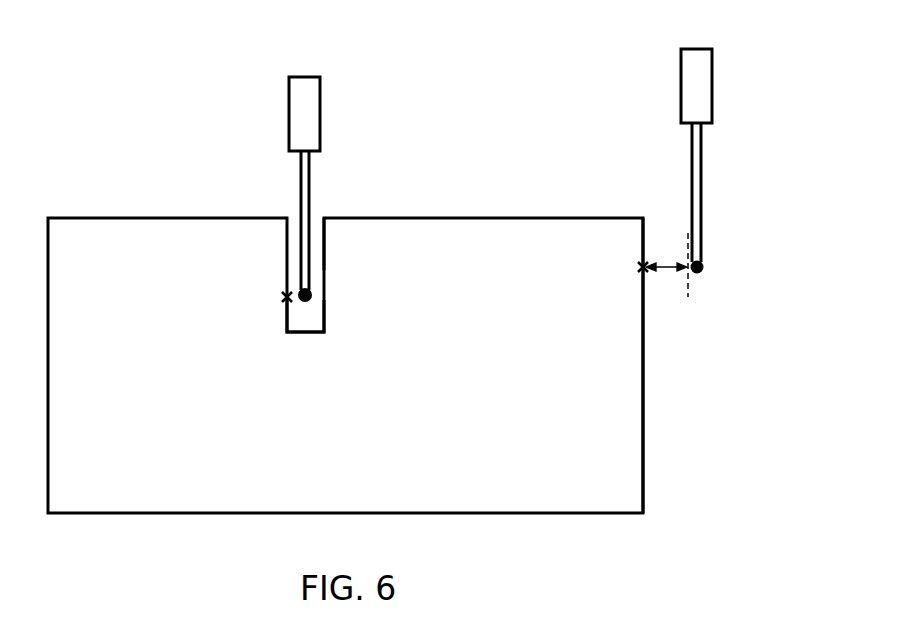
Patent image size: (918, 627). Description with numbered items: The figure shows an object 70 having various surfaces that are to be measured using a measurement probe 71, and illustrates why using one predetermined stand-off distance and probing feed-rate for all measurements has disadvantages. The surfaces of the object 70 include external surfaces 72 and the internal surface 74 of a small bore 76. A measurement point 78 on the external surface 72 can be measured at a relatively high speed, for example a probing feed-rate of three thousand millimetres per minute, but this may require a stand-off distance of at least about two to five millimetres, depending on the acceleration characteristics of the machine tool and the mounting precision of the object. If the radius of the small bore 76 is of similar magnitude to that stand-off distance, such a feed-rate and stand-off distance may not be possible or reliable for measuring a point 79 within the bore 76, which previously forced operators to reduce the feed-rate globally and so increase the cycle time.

The object 70 is at (165, 289).
The measurement probe 71 is at (320, 113).
The external surface 72 is at (644, 400).
The internal surface 74 is at (320, 312).
The small bore 76 is at (318, 230).
The measurement point 78 is at (646, 264).
The point within bore 79 is at (284, 298).